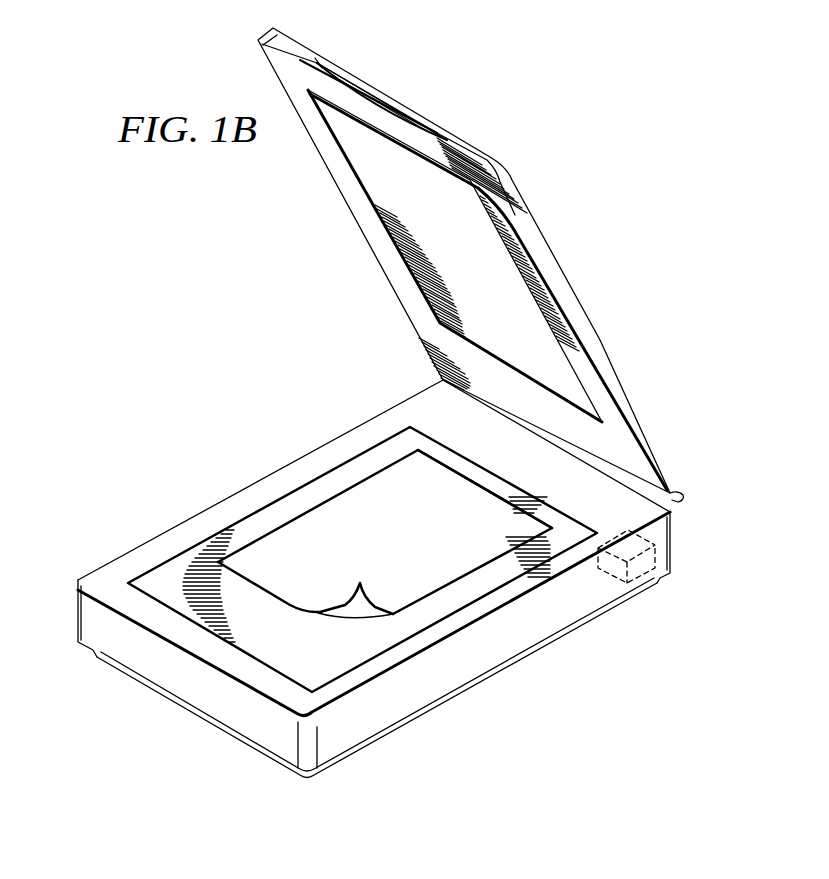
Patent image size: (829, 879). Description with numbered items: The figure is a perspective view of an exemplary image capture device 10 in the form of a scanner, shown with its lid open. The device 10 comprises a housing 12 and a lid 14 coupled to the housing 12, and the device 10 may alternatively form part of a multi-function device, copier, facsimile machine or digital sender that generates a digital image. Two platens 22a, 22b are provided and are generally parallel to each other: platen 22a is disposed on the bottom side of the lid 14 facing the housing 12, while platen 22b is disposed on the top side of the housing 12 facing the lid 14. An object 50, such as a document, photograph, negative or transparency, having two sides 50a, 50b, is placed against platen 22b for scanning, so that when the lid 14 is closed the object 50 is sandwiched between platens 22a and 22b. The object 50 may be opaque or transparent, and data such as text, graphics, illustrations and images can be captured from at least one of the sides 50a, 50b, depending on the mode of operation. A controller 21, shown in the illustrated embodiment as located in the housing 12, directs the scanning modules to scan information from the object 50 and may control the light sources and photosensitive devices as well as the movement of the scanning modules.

The image capture device 10 is at (578, 176).
The housing 12 is at (524, 640).
The lid 14 is at (362, 210).
The controller 21 is at (615, 575).
The platen 22a is at (430, 301).
The platen 22b is at (176, 571).
The object 50 is at (348, 486).
The side 50a is at (495, 507).
The side 50b is at (347, 605).